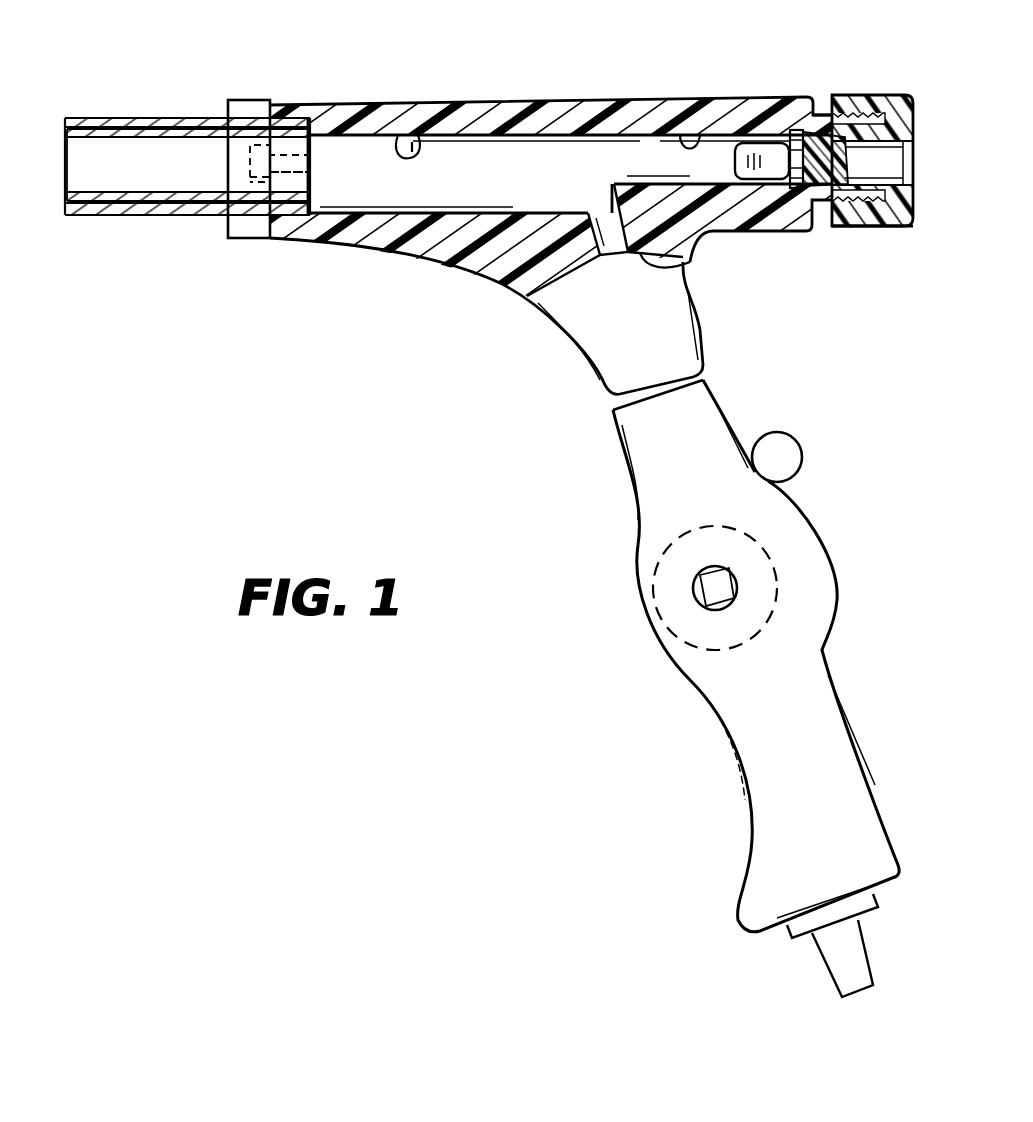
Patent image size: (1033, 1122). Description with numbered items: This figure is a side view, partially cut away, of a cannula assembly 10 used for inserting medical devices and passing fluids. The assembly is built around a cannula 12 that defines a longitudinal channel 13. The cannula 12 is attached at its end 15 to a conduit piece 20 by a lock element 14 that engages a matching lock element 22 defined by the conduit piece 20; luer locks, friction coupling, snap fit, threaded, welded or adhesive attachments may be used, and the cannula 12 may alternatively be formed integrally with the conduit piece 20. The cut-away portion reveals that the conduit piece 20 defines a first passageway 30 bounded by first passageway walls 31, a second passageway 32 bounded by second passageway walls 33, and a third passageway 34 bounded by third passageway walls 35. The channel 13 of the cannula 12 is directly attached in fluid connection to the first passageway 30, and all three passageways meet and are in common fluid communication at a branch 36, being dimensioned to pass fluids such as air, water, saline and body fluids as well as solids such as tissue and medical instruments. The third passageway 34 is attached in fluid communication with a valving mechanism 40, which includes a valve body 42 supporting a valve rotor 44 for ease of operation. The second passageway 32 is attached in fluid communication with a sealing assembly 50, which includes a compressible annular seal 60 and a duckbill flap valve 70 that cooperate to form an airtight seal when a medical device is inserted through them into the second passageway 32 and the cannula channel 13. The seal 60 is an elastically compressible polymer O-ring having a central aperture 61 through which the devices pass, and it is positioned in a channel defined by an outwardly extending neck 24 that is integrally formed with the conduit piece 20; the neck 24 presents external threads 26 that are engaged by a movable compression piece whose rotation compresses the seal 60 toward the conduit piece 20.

The cannula assembly 10 is at (847, 50).
The cannula 12 is at (157, 113).
The channel 13 is at (105, 167).
The lock element 14 is at (250, 177).
The end 15 is at (208, 243).
The conduit piece 20 is at (566, 99).
The lock element 22 is at (288, 97).
The neck 24 is at (818, 96).
The external threads 26 is at (820, 190).
The first passageway 30 is at (380, 140).
The first passageway walls 31 is at (406, 128).
The second passageway 32 is at (650, 166).
The second passageway walls 33 is at (693, 142).
The third passageway 34 is at (614, 245).
The third passageway walls 35 is at (672, 263).
The branch 36 is at (537, 172).
The valving mechanism 40 is at (853, 561).
The valve body 42 is at (795, 622).
The valve rotor 44 is at (748, 576).
The sealing assembly 50 is at (851, 236).
The compressible annular seal 60 is at (855, 166).
The central aperture 61 is at (800, 196).
The duckbill flap valve 70 is at (762, 150).